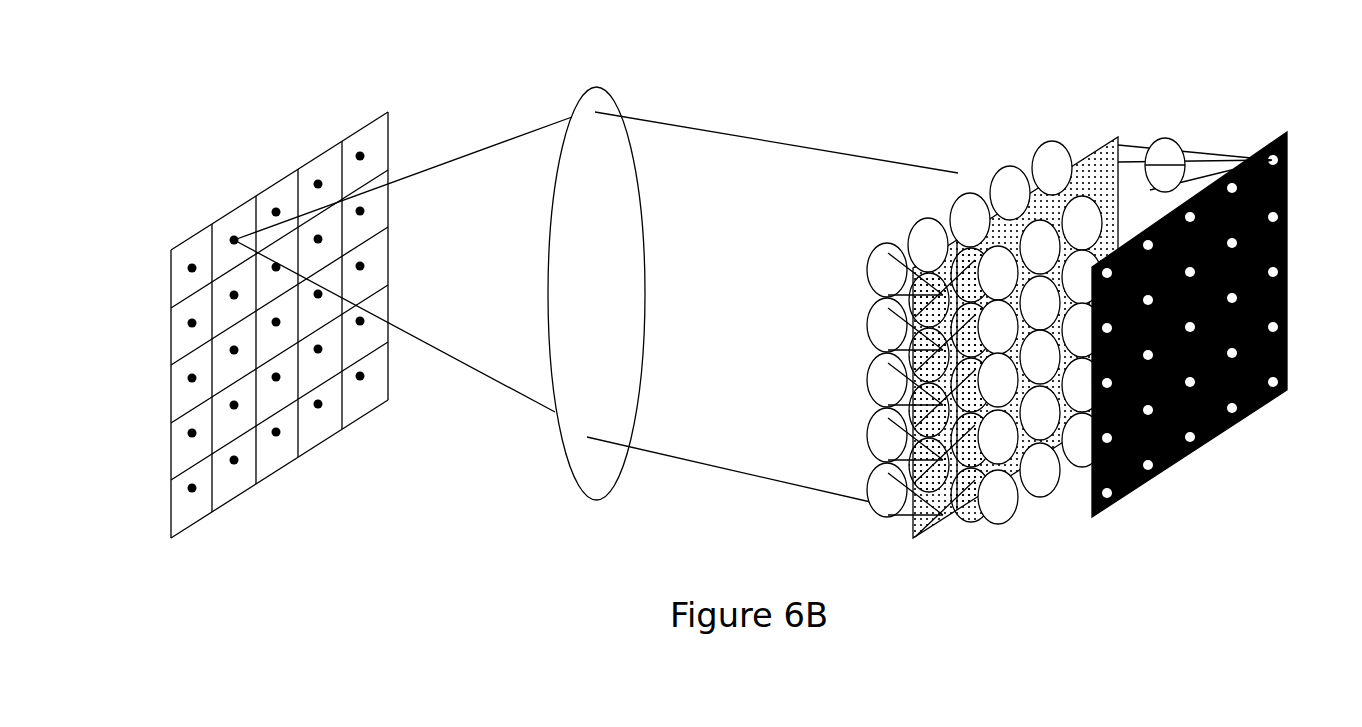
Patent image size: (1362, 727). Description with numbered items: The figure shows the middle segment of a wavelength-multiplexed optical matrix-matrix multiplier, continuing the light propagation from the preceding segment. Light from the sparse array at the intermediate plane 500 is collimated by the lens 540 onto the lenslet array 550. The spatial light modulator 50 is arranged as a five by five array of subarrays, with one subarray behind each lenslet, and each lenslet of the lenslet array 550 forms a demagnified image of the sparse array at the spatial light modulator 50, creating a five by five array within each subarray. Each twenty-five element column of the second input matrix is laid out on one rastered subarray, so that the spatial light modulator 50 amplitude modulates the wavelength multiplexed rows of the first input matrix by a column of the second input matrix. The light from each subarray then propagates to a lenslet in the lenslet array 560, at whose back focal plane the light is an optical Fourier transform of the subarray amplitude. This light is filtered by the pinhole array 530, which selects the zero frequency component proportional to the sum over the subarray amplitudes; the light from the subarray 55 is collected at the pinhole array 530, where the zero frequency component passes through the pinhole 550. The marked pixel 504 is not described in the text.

The intermediate plane 500 is at (333, 143).
The pixel 504 is at (235, 237).
The lens 540 is at (597, 87).
The spatial light modulator 50 is at (1115, 137).
The subarray 55 is at (1073, 150).
The lenslet array 550 is at (1003, 166).
The lenslet array 560 is at (1163, 138).
The pinhole array 530 is at (1285, 132).